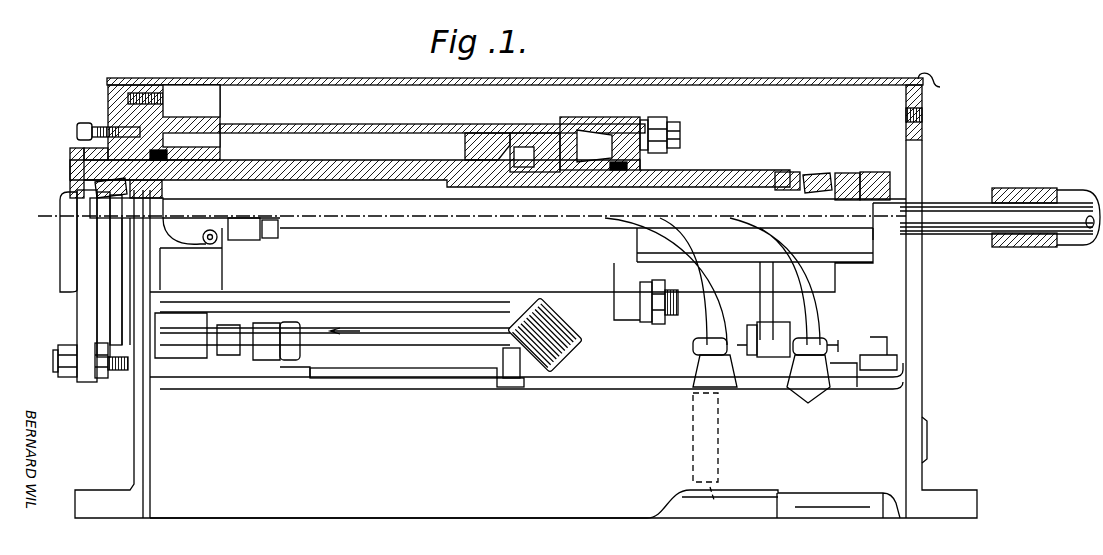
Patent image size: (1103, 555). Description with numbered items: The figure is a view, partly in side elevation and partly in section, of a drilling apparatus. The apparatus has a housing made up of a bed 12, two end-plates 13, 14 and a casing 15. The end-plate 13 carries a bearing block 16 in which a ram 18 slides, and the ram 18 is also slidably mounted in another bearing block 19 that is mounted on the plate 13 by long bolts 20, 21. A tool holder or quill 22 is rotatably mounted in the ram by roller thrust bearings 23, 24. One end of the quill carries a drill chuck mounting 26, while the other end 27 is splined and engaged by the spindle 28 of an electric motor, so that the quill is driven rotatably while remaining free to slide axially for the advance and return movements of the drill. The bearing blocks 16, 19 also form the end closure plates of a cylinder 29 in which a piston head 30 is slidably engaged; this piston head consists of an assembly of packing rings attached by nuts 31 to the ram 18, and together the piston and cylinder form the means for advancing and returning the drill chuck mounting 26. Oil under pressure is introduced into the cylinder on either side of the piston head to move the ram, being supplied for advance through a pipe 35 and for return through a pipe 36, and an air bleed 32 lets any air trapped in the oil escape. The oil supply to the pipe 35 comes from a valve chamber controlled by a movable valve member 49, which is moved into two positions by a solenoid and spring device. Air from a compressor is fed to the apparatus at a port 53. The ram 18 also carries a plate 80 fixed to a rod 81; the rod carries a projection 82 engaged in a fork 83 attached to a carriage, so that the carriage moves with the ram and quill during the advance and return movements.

The bed 12 is at (525, 480).
The end-plate 13 is at (141, 428).
The end-plate 14 is at (914, 151).
The casing 15 is at (938, 86).
The bearing block 16 is at (213, 118).
The ram 18 is at (284, 159).
The bearing block 19 is at (585, 117).
The long bolt 20 is at (682, 133).
The long bolt 21 is at (680, 305).
The quill 22 is at (422, 228).
The roller thrust bearing 23 is at (72, 180).
The roller thrust bearing 24 is at (823, 176).
The drill chuck mounting 26 is at (63, 224).
The splined end 27 is at (963, 204).
The spindle 28 is at (1010, 244).
The cylinder 29 is at (297, 124).
The piston head 30 is at (507, 133).
The nuts 31 is at (546, 135).
The air bleed 32 is at (85, 122).
The pipe 35 is at (762, 243).
The pipe 36 is at (713, 295).
The movable valve member 49 is at (719, 447).
The port 53 is at (923, 432).
The plate 80 is at (88, 300).
The rod 81 is at (58, 364).
The projection 82 is at (519, 386).
The fork 83 is at (494, 389).